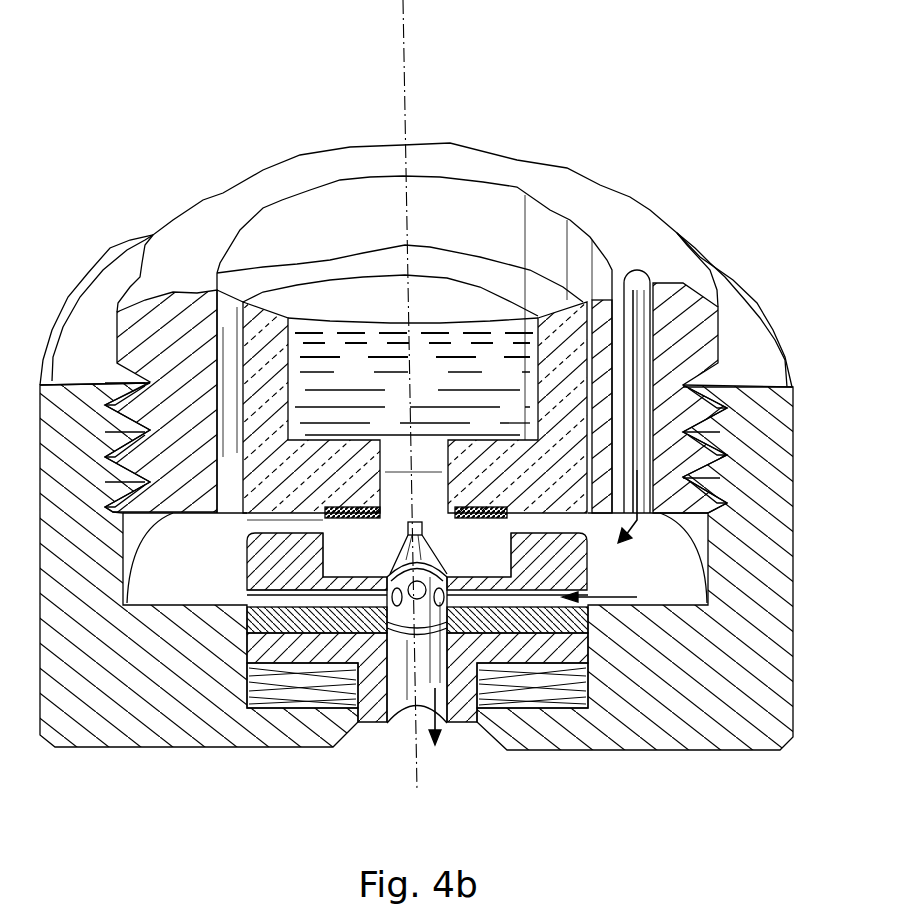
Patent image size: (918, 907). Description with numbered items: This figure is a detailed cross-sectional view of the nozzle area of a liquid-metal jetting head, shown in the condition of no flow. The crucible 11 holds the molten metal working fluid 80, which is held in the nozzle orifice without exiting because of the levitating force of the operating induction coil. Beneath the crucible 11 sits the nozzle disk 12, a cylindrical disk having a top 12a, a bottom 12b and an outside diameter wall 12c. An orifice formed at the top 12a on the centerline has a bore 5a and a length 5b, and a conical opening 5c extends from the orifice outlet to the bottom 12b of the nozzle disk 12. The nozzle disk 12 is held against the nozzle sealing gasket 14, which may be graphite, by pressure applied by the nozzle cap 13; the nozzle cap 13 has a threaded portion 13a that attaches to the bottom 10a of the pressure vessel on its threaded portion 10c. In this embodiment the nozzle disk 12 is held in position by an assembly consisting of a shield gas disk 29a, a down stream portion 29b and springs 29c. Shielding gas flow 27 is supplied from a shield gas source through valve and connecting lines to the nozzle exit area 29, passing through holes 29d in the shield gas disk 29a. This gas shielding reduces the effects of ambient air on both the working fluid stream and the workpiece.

The bore 5a is at (422, 528).
The length 5b is at (408, 528).
The conical opening 5c is at (507, 585).
The bottom of the pressure vessel 10a is at (133, 342).
The threaded portion 10c is at (705, 367).
The crucible 11 is at (562, 307).
The nozzle disk 12 is at (417, 561).
The top 12a is at (323, 540).
The bottom 12b is at (384, 574).
The outside diameter wall 12c is at (506, 574).
The nozzle cap 13 is at (795, 565).
The threaded portion 13a is at (723, 408).
The nozzle sealing gasket 14 is at (338, 507).
The shielding gas flow 27 is at (626, 538).
The nozzle exit area 29 is at (408, 700).
The shield gas disk 29a is at (247, 630).
The down stream portion 29b is at (463, 707).
The springs 29c is at (565, 690).
The holes 29d is at (490, 598).
The molten metal working fluid 80 is at (427, 403).